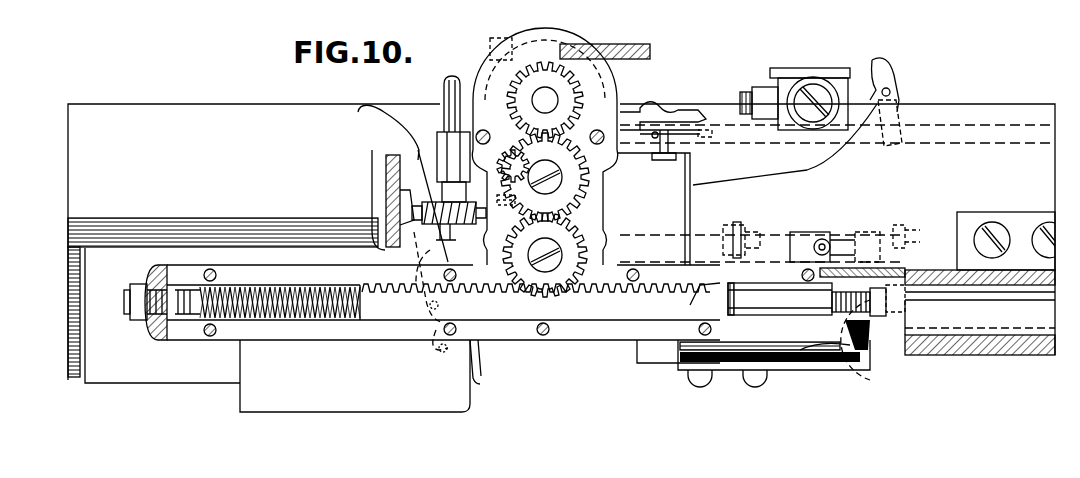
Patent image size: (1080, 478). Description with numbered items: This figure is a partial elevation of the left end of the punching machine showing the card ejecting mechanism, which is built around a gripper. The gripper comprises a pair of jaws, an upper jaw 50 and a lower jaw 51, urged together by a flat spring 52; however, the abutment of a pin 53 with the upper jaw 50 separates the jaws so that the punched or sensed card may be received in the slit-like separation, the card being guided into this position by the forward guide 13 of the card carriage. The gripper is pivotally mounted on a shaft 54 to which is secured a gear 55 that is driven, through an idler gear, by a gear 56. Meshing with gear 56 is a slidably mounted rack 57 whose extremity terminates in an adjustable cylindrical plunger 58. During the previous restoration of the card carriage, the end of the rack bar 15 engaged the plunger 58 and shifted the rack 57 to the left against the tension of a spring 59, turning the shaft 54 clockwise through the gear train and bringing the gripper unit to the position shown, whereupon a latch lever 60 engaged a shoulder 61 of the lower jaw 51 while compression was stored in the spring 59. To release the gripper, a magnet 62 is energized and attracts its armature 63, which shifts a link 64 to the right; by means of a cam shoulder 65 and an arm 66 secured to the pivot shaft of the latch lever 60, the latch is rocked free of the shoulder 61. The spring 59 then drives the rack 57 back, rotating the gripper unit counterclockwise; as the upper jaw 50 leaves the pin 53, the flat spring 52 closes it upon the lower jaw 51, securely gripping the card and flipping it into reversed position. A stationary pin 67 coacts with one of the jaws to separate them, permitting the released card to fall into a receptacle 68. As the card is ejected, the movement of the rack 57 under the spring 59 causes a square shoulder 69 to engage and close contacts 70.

The forward guide 13 is at (880, 92).
The rack bar 15 is at (918, 318).
The upper jaw 50 is at (694, 124).
The lower jaw 51 is at (724, 138).
The flat spring 52 is at (660, 108).
The pin 53 is at (678, 150).
The shaft 54 is at (548, 100).
The gear 55 is at (582, 95).
The gear 56 is at (558, 296).
The rack 57 is at (516, 306).
The adjustable cylindrical plunger 58 is at (888, 287).
The spring 59 is at (305, 320).
The latch lever 60 is at (462, 122).
The shoulder 61 is at (484, 72).
The magnet 62 is at (920, 228).
The armature 63 is at (858, 238).
The link 64 is at (735, 232).
The cam shoulder 65 is at (395, 178).
The arm 66 is at (547, 186).
The stationary pin 67 is at (445, 88).
The receptacle 68 is at (561, 258).
The square shoulder 69 is at (728, 300).
The contacts 70 is at (862, 362).